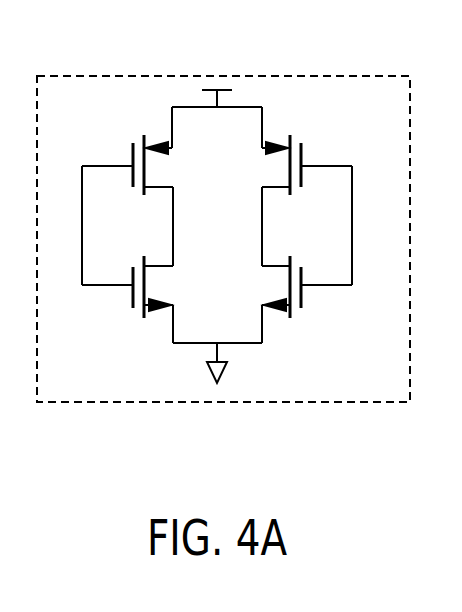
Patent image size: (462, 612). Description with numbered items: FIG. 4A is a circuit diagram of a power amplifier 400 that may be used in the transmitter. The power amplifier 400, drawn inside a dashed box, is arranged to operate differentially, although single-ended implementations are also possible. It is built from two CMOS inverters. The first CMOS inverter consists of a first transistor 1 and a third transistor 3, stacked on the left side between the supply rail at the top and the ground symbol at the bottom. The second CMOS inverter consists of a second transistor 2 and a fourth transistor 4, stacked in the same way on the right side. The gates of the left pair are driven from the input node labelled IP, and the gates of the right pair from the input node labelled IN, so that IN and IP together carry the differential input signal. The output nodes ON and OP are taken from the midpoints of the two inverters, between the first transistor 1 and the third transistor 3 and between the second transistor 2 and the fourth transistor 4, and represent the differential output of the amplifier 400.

The power amplifier 400 is at (75, 76).
The transistor T1 1 is at (168, 165).
The transistor T2 2 is at (267, 165).
The transistor T3 3 is at (168, 287).
The transistor T4 4 is at (268, 287).